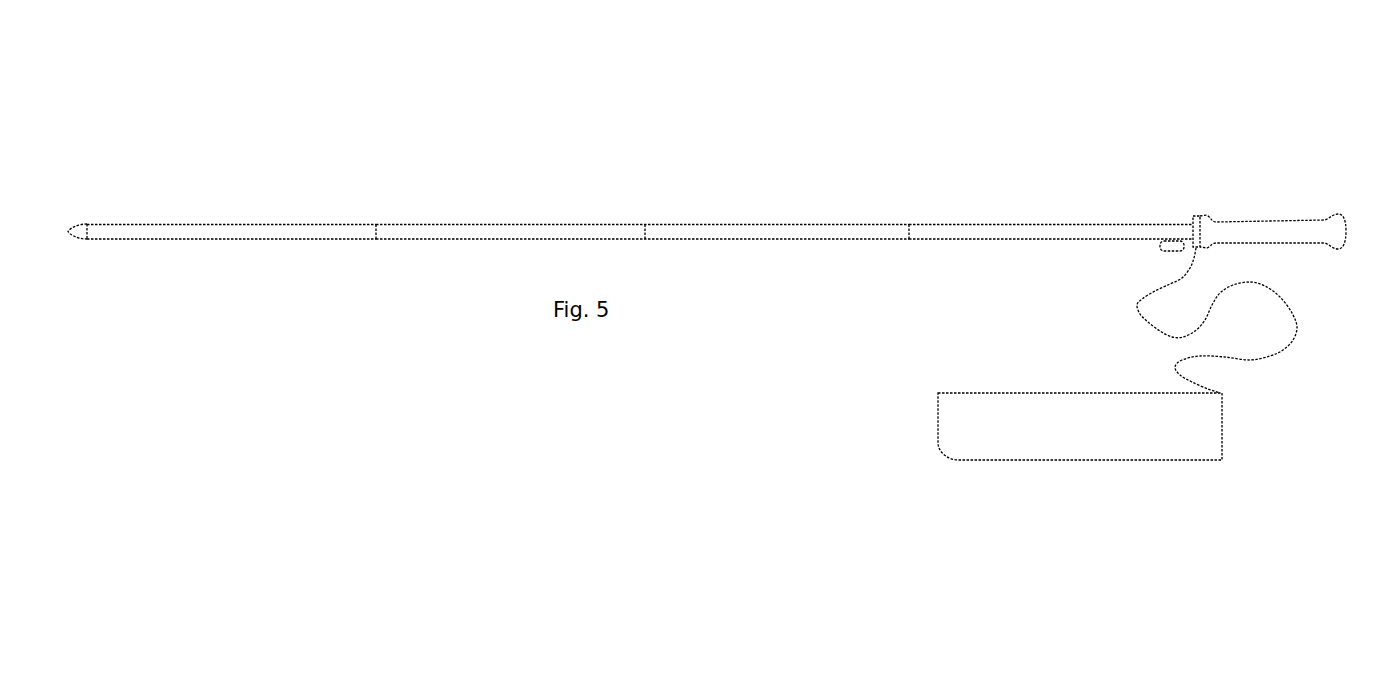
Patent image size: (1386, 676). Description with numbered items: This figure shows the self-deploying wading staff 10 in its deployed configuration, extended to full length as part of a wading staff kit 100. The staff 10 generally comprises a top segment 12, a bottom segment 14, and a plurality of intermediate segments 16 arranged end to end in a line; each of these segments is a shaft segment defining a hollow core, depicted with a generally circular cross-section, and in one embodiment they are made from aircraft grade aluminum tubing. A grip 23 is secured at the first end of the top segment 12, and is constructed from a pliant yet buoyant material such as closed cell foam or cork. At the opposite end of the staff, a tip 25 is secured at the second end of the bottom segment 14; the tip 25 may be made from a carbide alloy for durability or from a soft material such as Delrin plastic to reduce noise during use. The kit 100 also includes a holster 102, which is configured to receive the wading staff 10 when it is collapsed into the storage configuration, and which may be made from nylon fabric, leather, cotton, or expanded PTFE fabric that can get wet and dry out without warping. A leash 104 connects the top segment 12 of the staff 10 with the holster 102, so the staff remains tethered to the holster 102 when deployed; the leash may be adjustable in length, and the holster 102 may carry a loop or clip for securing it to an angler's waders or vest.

The self-deploying wading staff 10 is at (508, 194).
The top segment 12 is at (1005, 228).
The bottom segment 14 is at (203, 228).
The intermediate segments 16 is at (735, 230).
The grip 23 is at (1278, 230).
The tip 25 is at (83, 225).
The wading staff kit 100 is at (1272, 425).
The holster 102 is at (1003, 423).
The leash 104 is at (1133, 305).